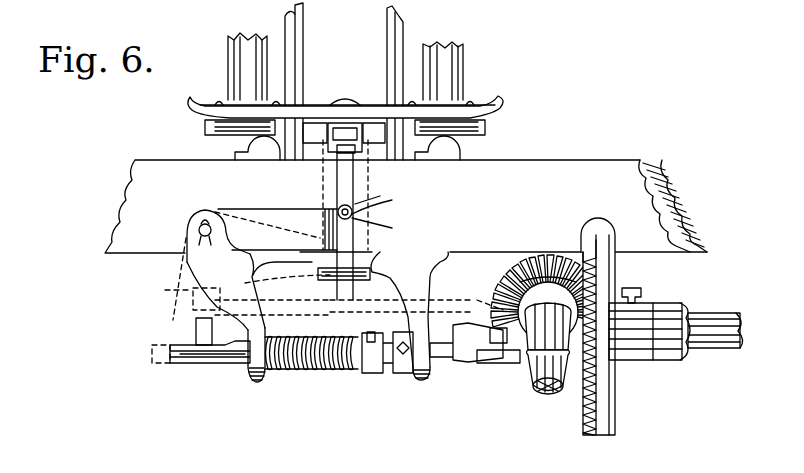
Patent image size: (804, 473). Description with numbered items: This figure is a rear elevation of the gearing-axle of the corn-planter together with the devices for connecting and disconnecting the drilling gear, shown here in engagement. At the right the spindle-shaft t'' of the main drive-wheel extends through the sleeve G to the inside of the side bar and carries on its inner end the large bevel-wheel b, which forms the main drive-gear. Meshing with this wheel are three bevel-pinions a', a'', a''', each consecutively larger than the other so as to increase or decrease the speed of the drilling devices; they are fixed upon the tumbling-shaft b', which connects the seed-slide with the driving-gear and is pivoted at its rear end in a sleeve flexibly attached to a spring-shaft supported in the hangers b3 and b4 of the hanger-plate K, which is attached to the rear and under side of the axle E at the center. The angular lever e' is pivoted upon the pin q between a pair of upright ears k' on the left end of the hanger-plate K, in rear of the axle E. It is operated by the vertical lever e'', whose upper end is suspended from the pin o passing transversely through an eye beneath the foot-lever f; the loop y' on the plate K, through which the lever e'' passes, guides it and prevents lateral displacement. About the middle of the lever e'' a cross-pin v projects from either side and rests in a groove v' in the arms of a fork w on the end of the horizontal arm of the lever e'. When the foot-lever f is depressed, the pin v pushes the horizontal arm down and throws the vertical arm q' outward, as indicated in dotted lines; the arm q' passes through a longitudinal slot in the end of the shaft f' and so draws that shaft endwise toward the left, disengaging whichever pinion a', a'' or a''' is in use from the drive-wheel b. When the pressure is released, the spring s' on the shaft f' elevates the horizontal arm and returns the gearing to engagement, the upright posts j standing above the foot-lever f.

The posts j is at (345, 66).
The foot-lever f is at (355, 115).
The pin o is at (318, 140).
The axle E is at (406, 206).
The vertical lever e'' is at (363, 220).
The cross-pin v is at (327, 199).
The fork w is at (392, 200).
The groove v' is at (379, 218).
The angular lever e' is at (276, 228).
The upright ears k' is at (218, 252).
The pin q is at (178, 231).
The hanger b3 is at (262, 382).
The loop y' is at (311, 280).
The hanger-plate K is at (409, 307).
The hanger b4 is at (422, 382).
The spring s' is at (392, 361).
The shaft f' is at (197, 358).
The vertical arm q' is at (300, 306).
The bevel-pinion a''' is at (532, 295).
The bevel-pinion a'' is at (514, 284).
The bevel-pinion a' is at (477, 307).
The tumbling-shaft b' is at (534, 357).
The bevel-wheel b is at (586, 326).
The sleeve G is at (670, 360).
The spindle-shaft t'' is at (715, 353).